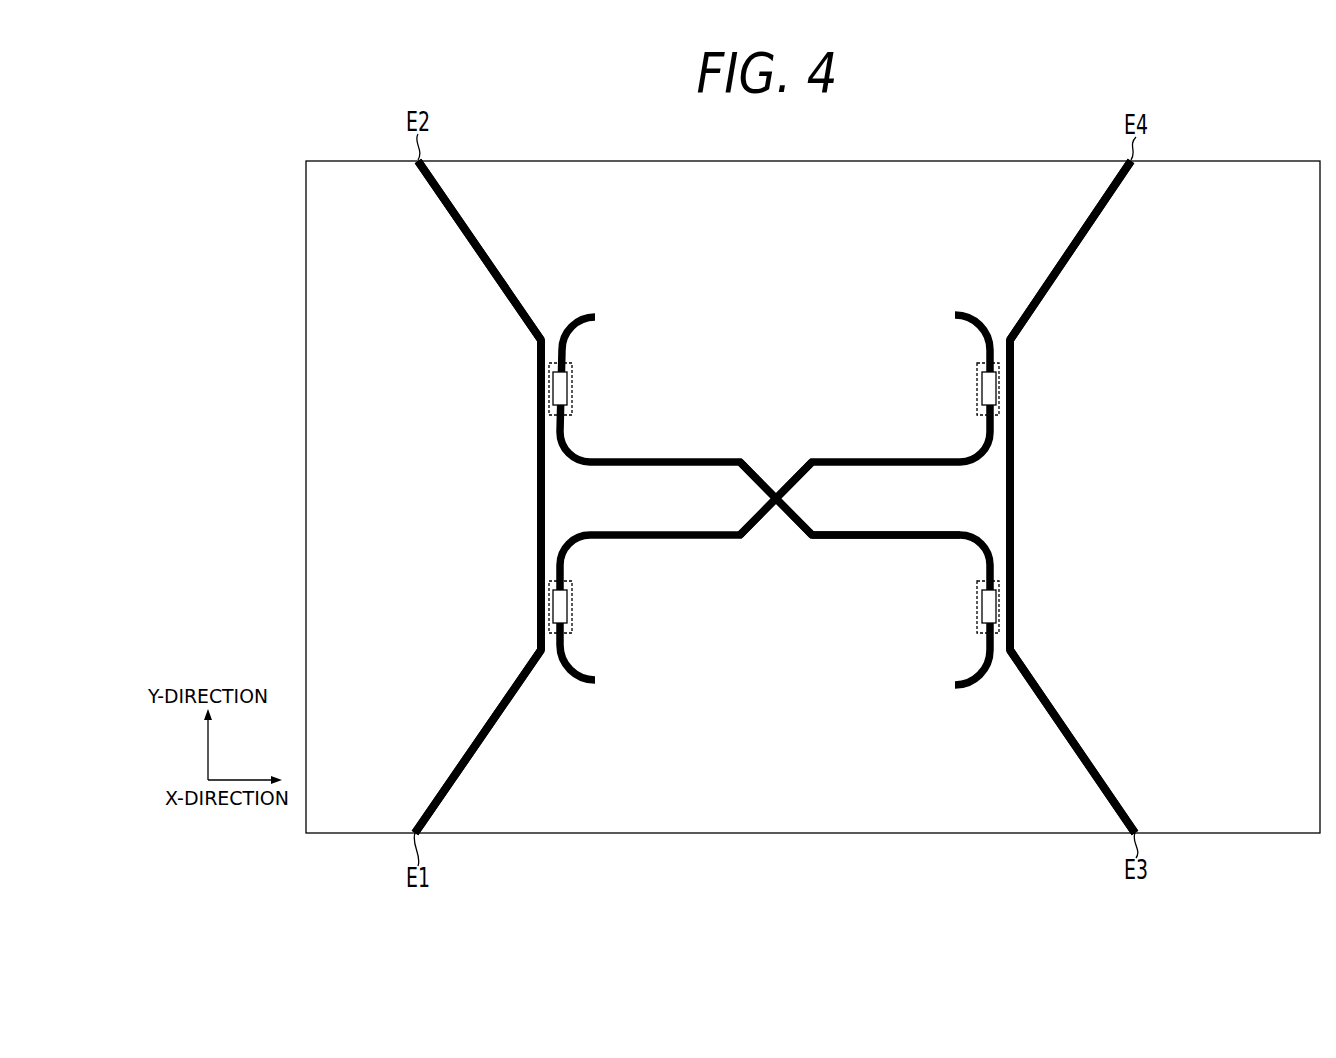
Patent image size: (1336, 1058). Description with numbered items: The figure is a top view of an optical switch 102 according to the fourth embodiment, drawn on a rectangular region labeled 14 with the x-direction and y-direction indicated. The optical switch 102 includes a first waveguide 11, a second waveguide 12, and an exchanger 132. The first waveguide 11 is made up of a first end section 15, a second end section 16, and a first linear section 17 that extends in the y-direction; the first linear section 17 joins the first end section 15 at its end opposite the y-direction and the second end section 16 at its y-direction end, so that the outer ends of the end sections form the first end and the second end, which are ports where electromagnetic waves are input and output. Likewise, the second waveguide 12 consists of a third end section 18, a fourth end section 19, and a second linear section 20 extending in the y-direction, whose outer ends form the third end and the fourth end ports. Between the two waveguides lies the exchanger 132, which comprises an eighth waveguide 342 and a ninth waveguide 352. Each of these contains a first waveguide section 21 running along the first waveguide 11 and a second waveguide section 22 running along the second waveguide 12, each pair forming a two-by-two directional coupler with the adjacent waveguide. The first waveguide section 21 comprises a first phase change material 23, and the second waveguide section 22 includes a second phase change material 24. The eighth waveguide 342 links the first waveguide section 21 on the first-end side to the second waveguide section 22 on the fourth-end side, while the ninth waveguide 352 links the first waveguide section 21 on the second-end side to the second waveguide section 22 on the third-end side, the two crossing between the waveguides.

The base 14 is at (368, 215).
The optical switch 102 is at (310, 853).
The first waveguide 11 is at (410, 398).
The second end section 16 is at (492, 277).
The first linear section 17 is at (538, 477).
The first end section 15 is at (514, 680).
The second waveguide 12 is at (1138, 398).
The fourth end section 19 is at (1063, 272).
The second linear section 20 is at (1013, 477).
The third end section 18 is at (1045, 690).
The exchanger 132 is at (880, 678).
The eighth waveguide 342 is at (700, 540).
The ninth waveguide 352 is at (860, 540).
The first waveguide section 21 is at (580, 397).
The first phase change material 23 is at (567, 378).
The second waveguide section 22 is at (968, 397).
The second phase change material 24 is at (982, 378).